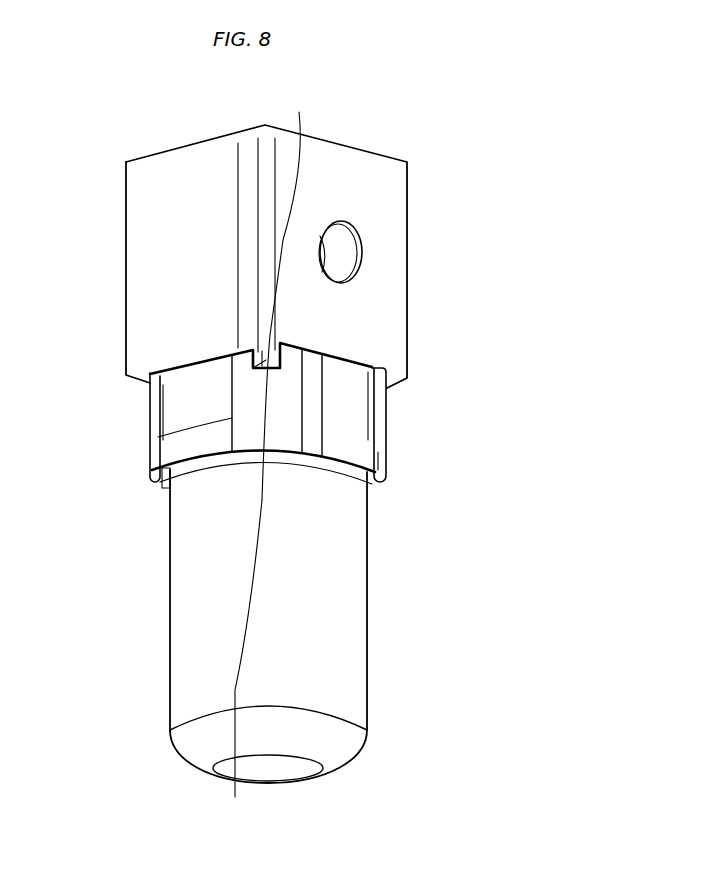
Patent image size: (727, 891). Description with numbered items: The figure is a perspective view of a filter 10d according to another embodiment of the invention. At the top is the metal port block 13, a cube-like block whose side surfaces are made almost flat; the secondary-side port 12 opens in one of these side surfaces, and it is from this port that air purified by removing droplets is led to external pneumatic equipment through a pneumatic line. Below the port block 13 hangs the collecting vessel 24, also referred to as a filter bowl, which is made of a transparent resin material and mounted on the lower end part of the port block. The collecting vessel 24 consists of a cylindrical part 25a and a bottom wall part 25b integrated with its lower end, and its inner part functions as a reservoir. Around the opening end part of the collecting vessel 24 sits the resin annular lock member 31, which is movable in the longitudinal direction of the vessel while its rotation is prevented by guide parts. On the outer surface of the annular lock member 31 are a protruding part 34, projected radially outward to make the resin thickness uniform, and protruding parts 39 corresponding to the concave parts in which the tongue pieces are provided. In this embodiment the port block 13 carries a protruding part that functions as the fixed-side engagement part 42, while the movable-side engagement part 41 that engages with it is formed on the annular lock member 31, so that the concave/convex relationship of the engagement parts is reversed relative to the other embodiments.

The filter 10d is at (432, 205).
The secondary-side port 12 is at (352, 253).
The port block 13 is at (356, 310).
The collecting vessel 24 is at (352, 548).
The cylindrical part 25a is at (332, 616).
The bottom wall part 25b is at (270, 768).
The annular lock member 31 is at (420, 457).
The protruding part 34 is at (278, 400).
The protruding part 39 is at (150, 410).
The movable-side engagement part 41 is at (284, 293).
The fixed-side engagement part 42 is at (243, 665).